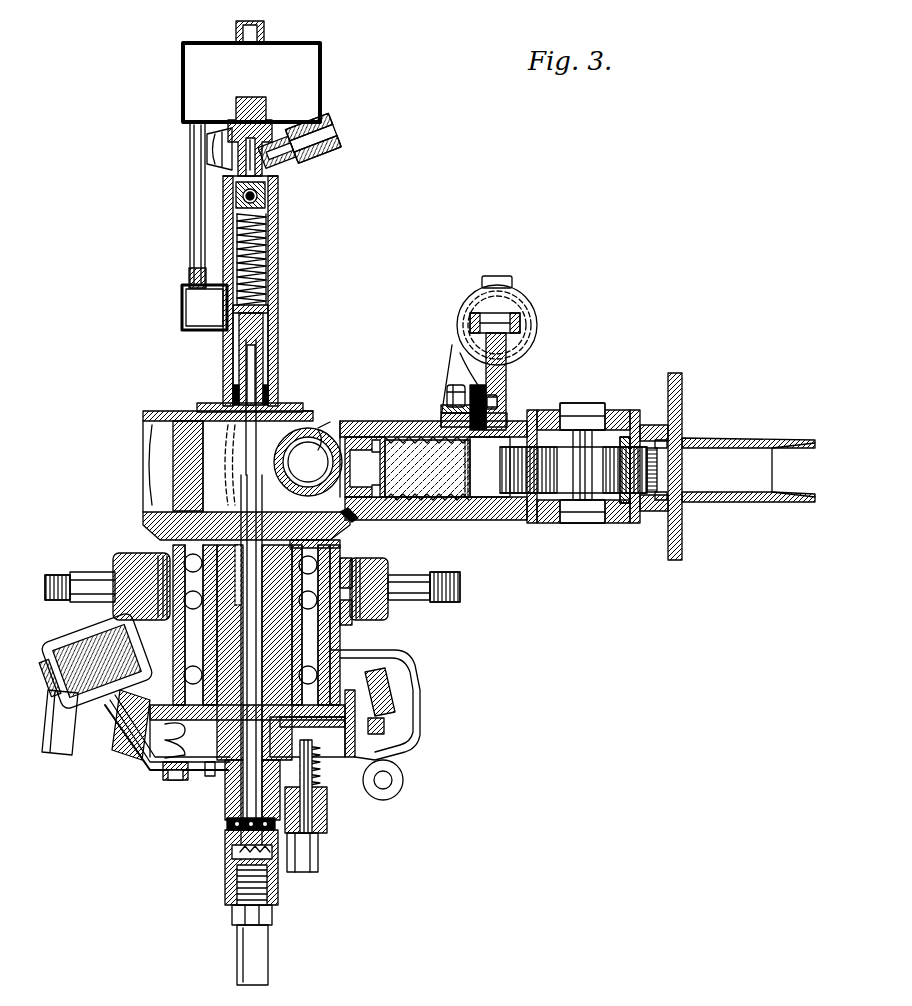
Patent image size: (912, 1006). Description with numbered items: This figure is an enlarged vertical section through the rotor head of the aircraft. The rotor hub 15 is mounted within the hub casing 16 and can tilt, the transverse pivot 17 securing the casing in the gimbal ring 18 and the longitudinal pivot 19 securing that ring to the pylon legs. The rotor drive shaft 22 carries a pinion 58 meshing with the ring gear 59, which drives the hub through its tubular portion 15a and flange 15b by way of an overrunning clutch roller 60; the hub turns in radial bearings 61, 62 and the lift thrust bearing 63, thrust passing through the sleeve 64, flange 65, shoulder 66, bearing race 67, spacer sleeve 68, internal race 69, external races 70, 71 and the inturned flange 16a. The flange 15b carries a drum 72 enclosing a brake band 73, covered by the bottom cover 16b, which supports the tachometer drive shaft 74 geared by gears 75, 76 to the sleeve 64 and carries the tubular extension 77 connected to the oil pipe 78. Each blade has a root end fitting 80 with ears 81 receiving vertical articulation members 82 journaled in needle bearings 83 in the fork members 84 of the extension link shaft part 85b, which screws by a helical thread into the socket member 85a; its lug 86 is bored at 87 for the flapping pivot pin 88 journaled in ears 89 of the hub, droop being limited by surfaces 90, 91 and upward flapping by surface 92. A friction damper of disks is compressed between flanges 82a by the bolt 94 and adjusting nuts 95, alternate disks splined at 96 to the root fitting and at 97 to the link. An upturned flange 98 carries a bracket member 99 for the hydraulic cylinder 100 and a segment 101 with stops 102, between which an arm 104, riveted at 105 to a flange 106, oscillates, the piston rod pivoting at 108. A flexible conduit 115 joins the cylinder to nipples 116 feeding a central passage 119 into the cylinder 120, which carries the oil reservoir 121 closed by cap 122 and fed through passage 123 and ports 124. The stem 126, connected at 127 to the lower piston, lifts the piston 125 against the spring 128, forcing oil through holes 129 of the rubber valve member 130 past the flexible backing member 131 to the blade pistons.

The rotor hub 15 is at (160, 510).
The tubular portion of the rotor hub 15a is at (325, 632).
The laterally extending flange 15b is at (355, 740).
The hub casing 16 is at (420, 665).
The inturned flange of the hub casing 16a is at (320, 548).
The bottom cover of the hub casing 16b is at (180, 762).
The transverse pivot 17 is at (165, 558).
The gimbal ring 18 is at (388, 615).
The longitudinal pivot 19 is at (80, 570).
The rotor drive shaft 22 is at (60, 755).
The pinion 58 is at (50, 660).
The ring gear 59 is at (395, 690).
The overrunning clutch roller 60 is at (384, 726).
The radial bearing 61 is at (125, 720).
The radial bearing 62 is at (370, 565).
The lift thrust bearing 63 is at (350, 625).
The sleeve 64 is at (192, 760).
The flange 65 is at (307, 737).
The shoulder 66 is at (185, 780).
The bearing race 67 is at (280, 638).
The spacer sleeve 68 is at (300, 660).
The internal race of the thrust bearing 69 is at (280, 585).
The external race 70 is at (318, 603).
The external race 71 is at (305, 580).
The drum 72 is at (395, 762).
The brake band 73 is at (140, 775).
The tachometer drive shaft 74 is at (327, 812).
The gear 75 is at (322, 775).
The gear 76 is at (210, 776).
The tubular extension 77 is at (225, 850).
The oil pipe 78 is at (237, 946).
The root end fitting 80 is at (682, 398).
The ears 81 is at (532, 522).
The vertical articulation members 82 is at (625, 520).
The flanges of the articulation members 82a is at (667, 447).
The needle bearings 83 is at (650, 512).
The apertured fork members 84 is at (683, 430).
The socket member of the extension link 85a is at (430, 520).
The shaft part of the extension link 85b is at (480, 520).
The lug 86 is at (290, 446).
The horizontal bore 87 is at (335, 420).
The flapping pivot pin 88 is at (293, 462).
The ears 89 is at (173, 450).
The cooperating surface 90 is at (358, 522).
The cooperating surface 91 is at (355, 530).
The cooperating surface 92 is at (320, 444).
The bolt 94 is at (582, 403).
The adjusting nuts 95 is at (303, 420).
The spline to the root end fitting 96 is at (657, 475).
The spline to the extension link 97 is at (500, 468).
The upturned flange 98 is at (460, 353).
The bracket member 99 is at (441, 405).
The hydraulic cylinder 100 is at (457, 302).
The segment 101 is at (482, 467).
The stops 102 is at (490, 380).
The arm 104 is at (506, 345).
The rivet 105 is at (447, 392).
The flange 106 is at (500, 400).
The pivot 108 is at (512, 320).
The flexible conduit 115 is at (322, 140).
The nipples 116 is at (300, 170).
The central passage 119 is at (254, 168).
The cylinder 120 is at (279, 250).
The oil reservoir 121 is at (321, 75).
The closure cap 122 is at (264, 28).
The gravity feed passage 123 is at (190, 208).
The ports 124 is at (233, 318).
The piston 125 is at (264, 339).
The stem 126 is at (245, 482).
The anti-friction bearing connection 127 is at (227, 826).
The spring 128 is at (268, 282).
The holes 129 is at (266, 200).
The rubber valve member 130 is at (246, 200).
The flexible backing member 131 is at (190, 190).